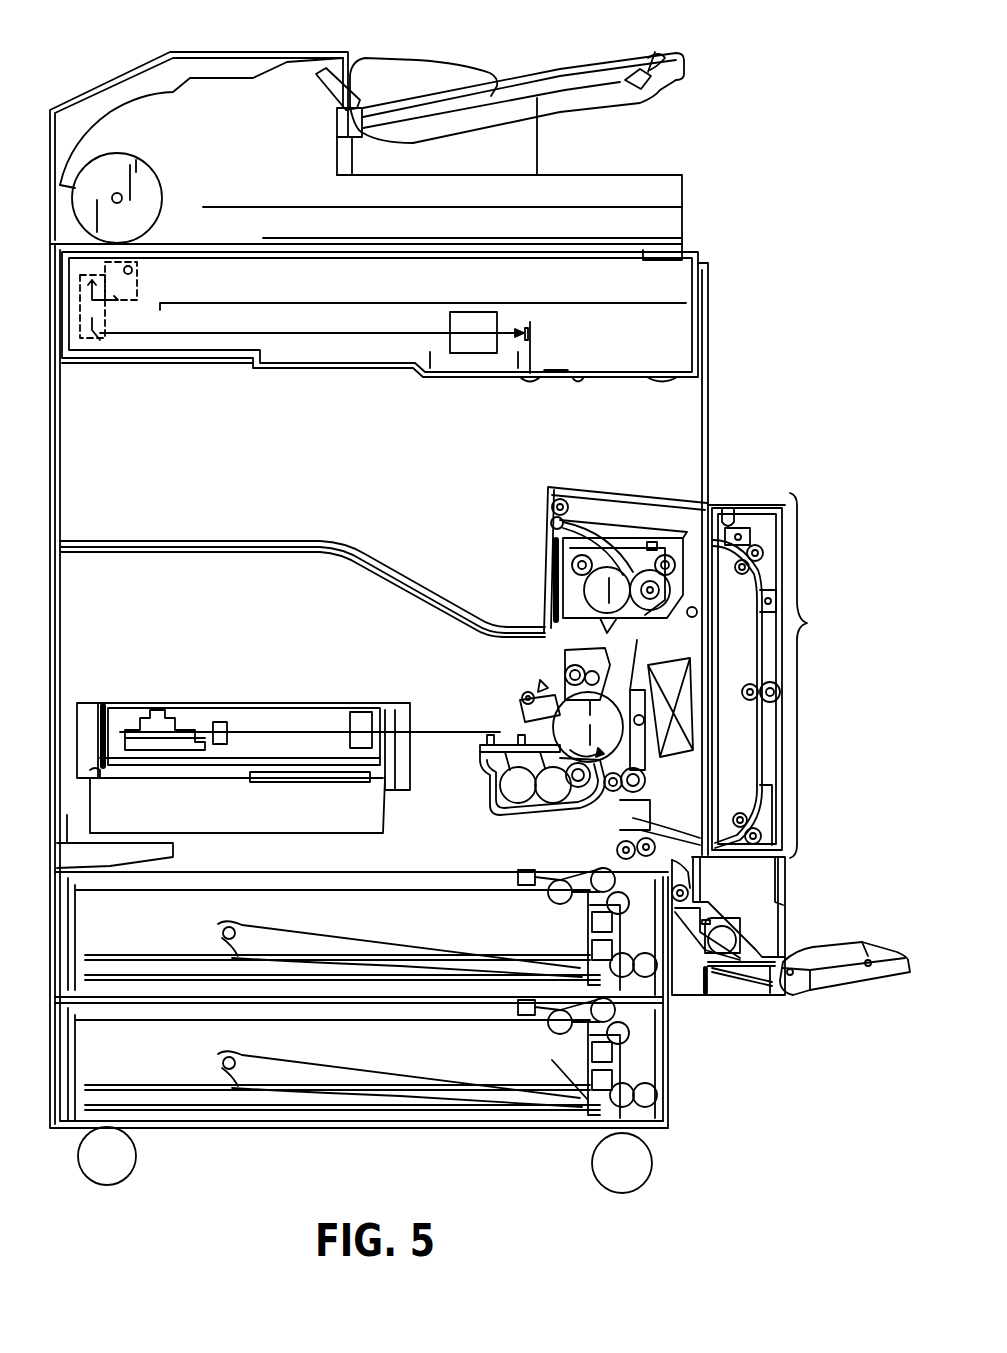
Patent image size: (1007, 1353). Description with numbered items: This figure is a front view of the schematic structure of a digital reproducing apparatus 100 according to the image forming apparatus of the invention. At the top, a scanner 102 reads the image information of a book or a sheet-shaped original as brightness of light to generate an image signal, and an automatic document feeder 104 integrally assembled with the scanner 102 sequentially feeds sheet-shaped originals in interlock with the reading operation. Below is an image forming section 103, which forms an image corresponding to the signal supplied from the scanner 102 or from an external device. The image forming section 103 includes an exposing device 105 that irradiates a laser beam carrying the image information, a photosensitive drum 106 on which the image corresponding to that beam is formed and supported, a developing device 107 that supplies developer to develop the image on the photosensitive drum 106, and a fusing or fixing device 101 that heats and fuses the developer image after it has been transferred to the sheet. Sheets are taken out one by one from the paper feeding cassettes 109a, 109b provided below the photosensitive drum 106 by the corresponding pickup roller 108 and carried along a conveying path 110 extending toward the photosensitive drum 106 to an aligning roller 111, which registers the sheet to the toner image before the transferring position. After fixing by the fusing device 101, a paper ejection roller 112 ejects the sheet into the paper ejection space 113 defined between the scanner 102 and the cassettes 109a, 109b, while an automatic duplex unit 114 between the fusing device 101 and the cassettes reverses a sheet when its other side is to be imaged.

The digital reproducing apparatus 100 is at (675, 430).
The fusing or fixing device 101 is at (602, 557).
The scanner 102 is at (195, 315).
The image forming section 103 is at (779, 675).
The automatic document feeder 104 is at (190, 113).
The exposing device 105 is at (185, 731).
The photosensitive drum 106 is at (567, 722).
The developing device 107 is at (522, 815).
The pickup roller 108 is at (558, 901).
The paper feeding cassette 109a is at (315, 926).
The paper feeding cassette 109b is at (315, 1056).
The conveying path 110 is at (706, 880).
The aligning roller 111 is at (612, 791).
The paper ejection roller 112 is at (548, 510).
The paper ejection space 113 is at (352, 548).
The automatic duplex unit 114 is at (765, 662).